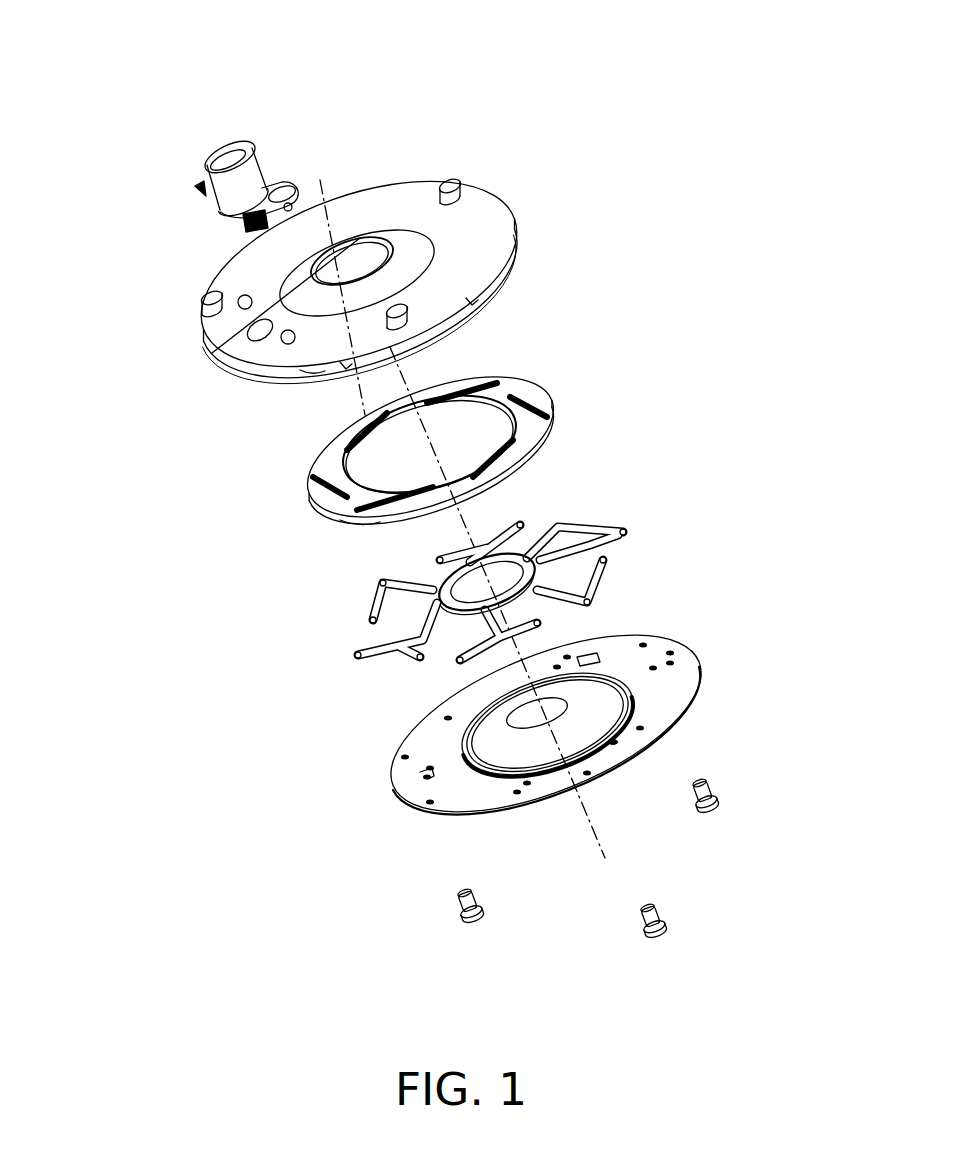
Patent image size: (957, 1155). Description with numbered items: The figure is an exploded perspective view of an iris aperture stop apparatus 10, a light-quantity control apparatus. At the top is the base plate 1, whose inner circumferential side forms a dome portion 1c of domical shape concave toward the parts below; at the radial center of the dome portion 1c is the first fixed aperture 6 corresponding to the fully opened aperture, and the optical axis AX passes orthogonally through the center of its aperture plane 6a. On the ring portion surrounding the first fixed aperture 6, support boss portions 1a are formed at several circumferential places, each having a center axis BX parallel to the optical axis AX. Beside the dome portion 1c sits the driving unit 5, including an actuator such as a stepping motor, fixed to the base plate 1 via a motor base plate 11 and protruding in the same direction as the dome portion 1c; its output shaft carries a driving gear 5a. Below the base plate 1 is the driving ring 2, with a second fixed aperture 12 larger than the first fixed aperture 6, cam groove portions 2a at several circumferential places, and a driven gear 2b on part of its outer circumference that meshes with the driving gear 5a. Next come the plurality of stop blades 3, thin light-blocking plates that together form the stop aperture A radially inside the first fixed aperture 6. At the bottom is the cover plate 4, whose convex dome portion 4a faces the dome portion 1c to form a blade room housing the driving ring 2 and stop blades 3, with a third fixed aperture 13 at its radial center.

The iris aperture stop apparatus 10 is at (422, 98).
The base plate 1 is at (490, 208).
The support boss portion 1a is at (312, 372).
The dome portion 1c is at (403, 257).
The first fixed aperture 6 is at (363, 258).
The aperture plane 6a is at (212, 353).
The driving unit 5 is at (265, 150).
The driving gear 5a is at (250, 222).
The motor base plate 11 is at (298, 181).
The driving ring 2 is at (537, 383).
The cam groove portion 2a is at (520, 460).
The driven gear 2b is at (363, 517).
The second fixed aperture 12 is at (456, 422).
The stop blades 3 is at (563, 527).
The stop aperture A is at (503, 572).
The cover plate 4 is at (688, 713).
The dome portion 4a is at (592, 702).
The third fixed aperture 13 is at (547, 700).
The optical axis AX is at (600, 834).
The center axis BX is at (357, 400).